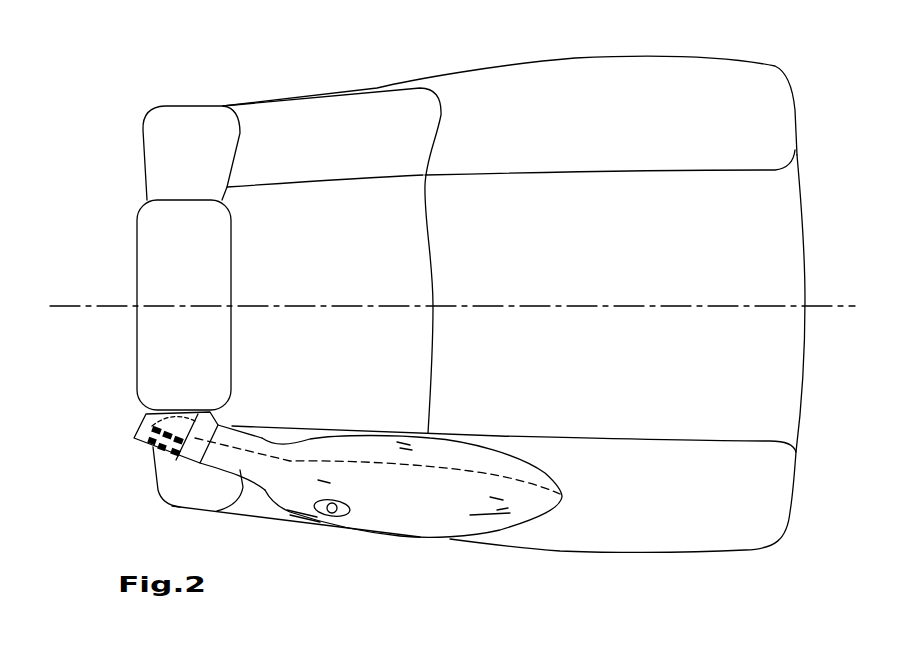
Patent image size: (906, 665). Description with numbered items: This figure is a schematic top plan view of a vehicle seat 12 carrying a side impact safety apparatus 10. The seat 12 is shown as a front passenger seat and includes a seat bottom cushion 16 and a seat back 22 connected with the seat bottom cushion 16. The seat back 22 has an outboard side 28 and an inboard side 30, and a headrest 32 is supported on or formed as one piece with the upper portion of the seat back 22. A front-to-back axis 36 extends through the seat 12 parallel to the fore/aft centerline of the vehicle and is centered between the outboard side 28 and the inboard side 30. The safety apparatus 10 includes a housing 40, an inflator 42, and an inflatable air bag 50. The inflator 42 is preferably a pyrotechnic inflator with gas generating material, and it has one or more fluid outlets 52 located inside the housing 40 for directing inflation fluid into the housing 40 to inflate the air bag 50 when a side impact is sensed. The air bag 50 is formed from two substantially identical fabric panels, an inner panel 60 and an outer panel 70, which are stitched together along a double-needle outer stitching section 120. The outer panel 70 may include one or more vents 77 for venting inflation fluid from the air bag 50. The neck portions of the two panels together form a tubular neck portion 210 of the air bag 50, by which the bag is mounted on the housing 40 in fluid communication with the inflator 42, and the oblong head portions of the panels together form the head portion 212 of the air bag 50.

The safety apparatus 10 is at (122, 410).
The vehicle seat 12 is at (798, 64).
The seat bottom cushion 16 is at (576, 58).
The seat back 22 is at (446, 268).
The outboard side 28 is at (264, 520).
The inboard side 30 is at (285, 91).
The headrest 32 is at (232, 258).
The front-to-back axis 36 is at (822, 304).
The housing 40 is at (131, 424).
The inflator 42 is at (148, 440).
The air bag 50 is at (319, 541).
The fluid outlets 52 is at (152, 447).
The inner panel 60 is at (468, 455).
The outer panel 70 is at (427, 500).
The vents 77 is at (342, 514).
The outer stitching section 120 is at (437, 465).
The neck portion 210 is at (265, 428).
The head portion 212 is at (397, 422).